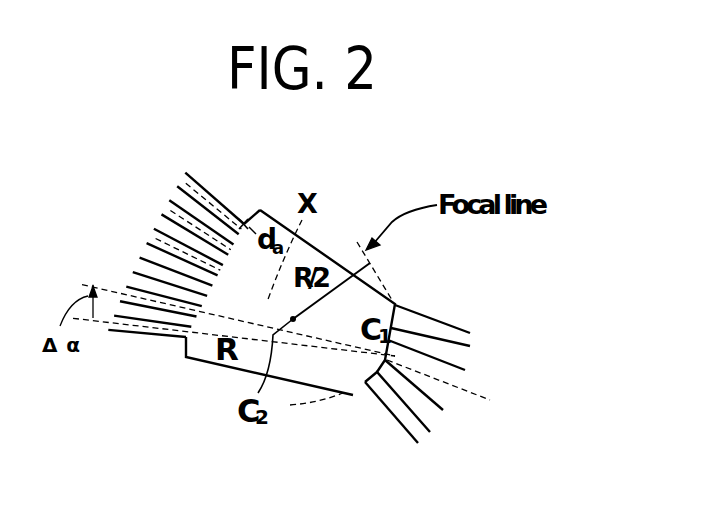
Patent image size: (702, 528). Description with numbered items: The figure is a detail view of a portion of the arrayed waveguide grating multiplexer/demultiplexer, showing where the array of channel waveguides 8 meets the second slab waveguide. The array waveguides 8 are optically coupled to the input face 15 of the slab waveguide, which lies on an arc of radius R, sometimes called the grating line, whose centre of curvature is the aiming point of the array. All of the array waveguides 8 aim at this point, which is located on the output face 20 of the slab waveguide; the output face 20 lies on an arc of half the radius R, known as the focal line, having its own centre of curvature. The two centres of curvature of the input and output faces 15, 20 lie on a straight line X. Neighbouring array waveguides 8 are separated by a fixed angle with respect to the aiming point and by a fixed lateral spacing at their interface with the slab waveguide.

The array waveguides 8 is at (170, 134).
The input face 15 is at (182, 342).
The output face 20 is at (397, 304).